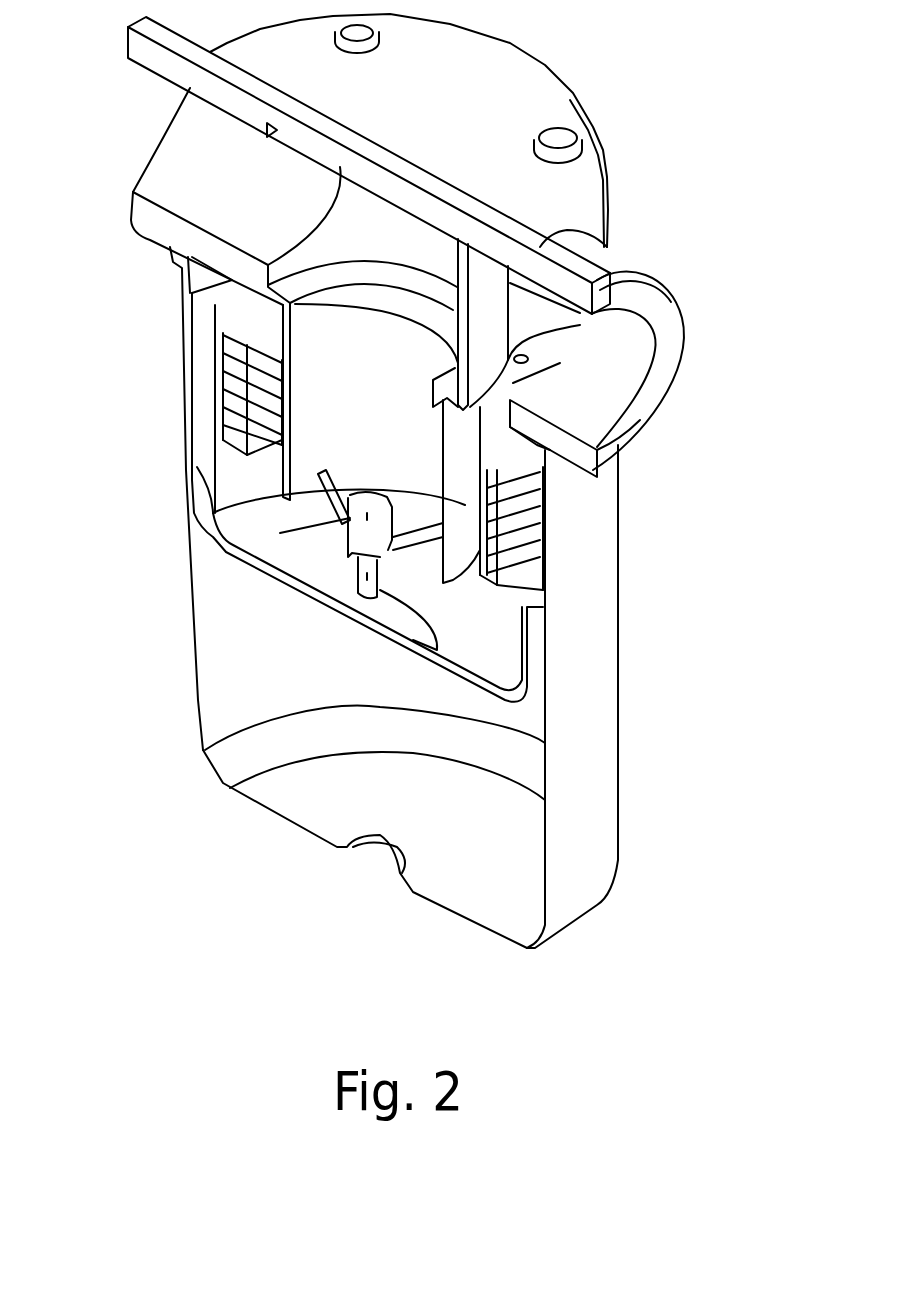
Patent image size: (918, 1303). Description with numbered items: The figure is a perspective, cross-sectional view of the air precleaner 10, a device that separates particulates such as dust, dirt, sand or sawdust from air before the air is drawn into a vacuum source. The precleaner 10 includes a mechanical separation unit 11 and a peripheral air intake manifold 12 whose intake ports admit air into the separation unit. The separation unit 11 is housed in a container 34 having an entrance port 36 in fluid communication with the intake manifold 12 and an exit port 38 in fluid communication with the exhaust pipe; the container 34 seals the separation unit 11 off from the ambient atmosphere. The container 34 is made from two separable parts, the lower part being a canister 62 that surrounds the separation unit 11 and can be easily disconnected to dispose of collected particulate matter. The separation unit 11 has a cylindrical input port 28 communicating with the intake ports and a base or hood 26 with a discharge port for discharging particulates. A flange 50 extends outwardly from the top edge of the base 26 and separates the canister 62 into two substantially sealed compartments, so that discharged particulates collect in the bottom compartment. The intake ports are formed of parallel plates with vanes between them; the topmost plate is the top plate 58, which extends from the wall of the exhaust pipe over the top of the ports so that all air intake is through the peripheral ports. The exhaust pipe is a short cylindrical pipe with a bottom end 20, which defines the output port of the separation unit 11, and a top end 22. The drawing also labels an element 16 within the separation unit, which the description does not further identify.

The air precleaner 10 is at (168, 557).
The mechanical separation unit 11 is at (211, 408).
The peripheral air intake manifold 12 is at (500, 460).
The spring 16 is at (313, 395).
The bottom end 20 is at (338, 510).
The top end 22 is at (385, 307).
The base or hood 26 is at (258, 570).
The input port 28 is at (467, 557).
The container 34 is at (627, 237).
The entrance port 36 is at (633, 352).
The exit port 38 is at (162, 78).
The flange 50 is at (537, 587).
The top plate 58 is at (259, 333).
The canister 62 is at (592, 765).